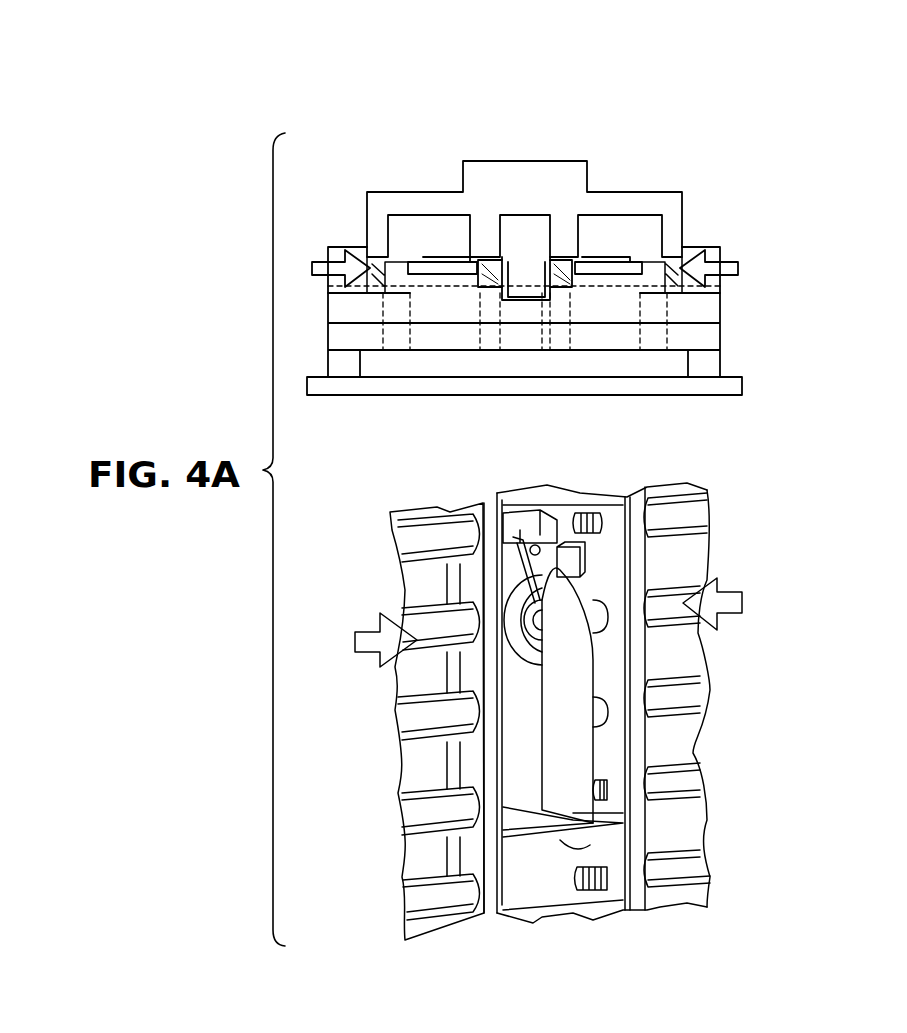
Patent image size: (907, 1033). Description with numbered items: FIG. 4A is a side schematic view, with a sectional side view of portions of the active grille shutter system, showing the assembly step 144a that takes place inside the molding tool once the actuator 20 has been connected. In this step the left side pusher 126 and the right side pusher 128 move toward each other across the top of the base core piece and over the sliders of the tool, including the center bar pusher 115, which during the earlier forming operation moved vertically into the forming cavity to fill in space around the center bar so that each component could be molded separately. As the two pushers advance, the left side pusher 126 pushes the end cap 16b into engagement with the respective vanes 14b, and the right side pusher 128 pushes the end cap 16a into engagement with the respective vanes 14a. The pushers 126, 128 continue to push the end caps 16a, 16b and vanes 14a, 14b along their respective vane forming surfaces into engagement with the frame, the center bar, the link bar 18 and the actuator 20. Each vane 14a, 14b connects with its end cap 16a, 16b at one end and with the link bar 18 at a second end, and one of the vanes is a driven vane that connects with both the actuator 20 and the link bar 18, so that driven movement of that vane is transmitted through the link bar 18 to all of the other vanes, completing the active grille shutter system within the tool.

The step 144a is at (746, 108).
The actuator 20 is at (523, 275).
The end cap 16b is at (370, 258).
The vane 14b is at (445, 268).
The left side pusher 126 is at (362, 248).
The vane 14a is at (602, 262).
The end cap 16a is at (675, 260).
The right side pusher 128 is at (688, 247).
The link bar 18 is at (527, 299).
The center bar pusher 115 is at (518, 318).